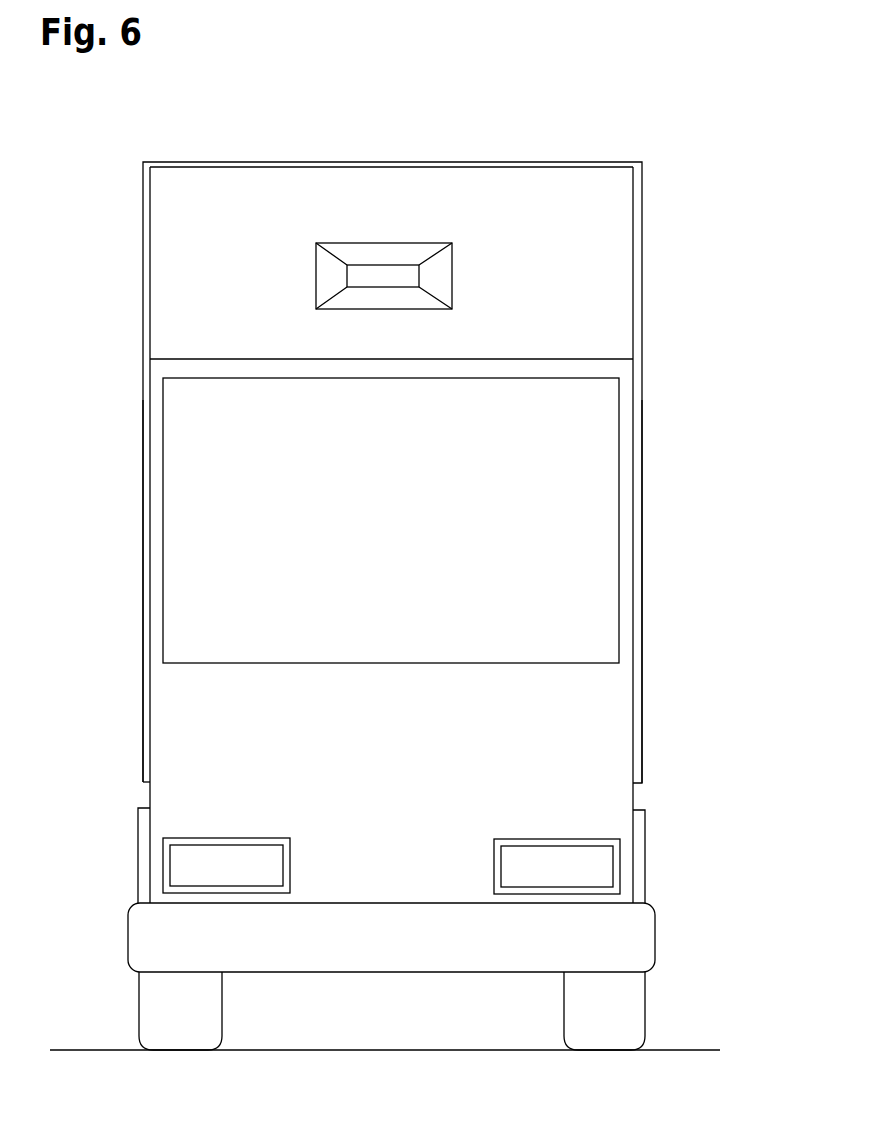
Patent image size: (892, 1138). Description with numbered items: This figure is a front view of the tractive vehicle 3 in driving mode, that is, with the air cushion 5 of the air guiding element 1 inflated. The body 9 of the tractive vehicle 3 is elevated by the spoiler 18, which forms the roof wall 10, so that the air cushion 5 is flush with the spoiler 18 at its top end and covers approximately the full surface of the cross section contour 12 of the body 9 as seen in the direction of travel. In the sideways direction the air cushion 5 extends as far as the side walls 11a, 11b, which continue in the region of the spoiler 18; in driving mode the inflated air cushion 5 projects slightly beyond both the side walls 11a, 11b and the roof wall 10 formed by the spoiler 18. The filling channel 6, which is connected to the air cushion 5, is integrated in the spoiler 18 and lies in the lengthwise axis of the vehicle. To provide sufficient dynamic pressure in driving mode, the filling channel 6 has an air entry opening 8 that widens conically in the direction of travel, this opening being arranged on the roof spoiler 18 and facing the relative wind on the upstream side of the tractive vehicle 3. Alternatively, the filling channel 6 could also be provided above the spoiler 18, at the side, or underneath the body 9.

The air guiding element 1 is at (620, 132).
The tractive vehicle 3 is at (688, 806).
The air cushion 5 is at (143, 393).
The filling channel 6 is at (382, 273).
The air entry opening 8 is at (325, 272).
The body 9 is at (385, 721).
The roof wall 10 is at (313, 163).
The side wall 11a is at (634, 593).
The side wall 11b is at (148, 608).
The cross section contour 12 is at (634, 321).
The spoiler 18 is at (563, 227).